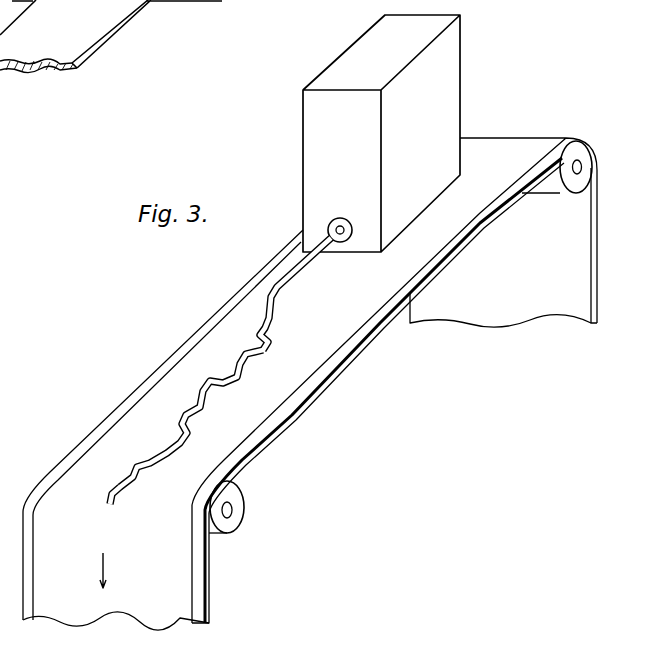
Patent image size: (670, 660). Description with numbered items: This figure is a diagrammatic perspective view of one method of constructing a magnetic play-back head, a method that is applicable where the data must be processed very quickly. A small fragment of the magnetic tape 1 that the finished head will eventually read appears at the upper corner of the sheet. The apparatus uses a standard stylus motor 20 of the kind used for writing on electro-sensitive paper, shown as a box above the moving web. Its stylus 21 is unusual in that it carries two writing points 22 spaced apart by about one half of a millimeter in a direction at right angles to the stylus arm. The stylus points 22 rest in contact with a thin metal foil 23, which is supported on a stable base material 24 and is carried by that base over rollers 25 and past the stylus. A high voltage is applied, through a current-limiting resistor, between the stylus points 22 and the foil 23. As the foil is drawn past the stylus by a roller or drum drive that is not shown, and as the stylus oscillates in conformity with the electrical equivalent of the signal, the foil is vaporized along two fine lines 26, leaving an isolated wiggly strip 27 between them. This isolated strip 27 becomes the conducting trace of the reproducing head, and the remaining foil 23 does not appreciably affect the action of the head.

The magnetic tape 1 is at (114, 14).
The stylus motor 20 is at (460, 70).
The stylus 21 is at (308, 271).
The writing points 22 is at (279, 313).
The thin metal foil 23 is at (317, 362).
The stable base material 24 is at (292, 415).
The rollers 25 is at (597, 163).
The fine lines 26 is at (191, 428).
The isolated wiggly strip 27 is at (112, 509).